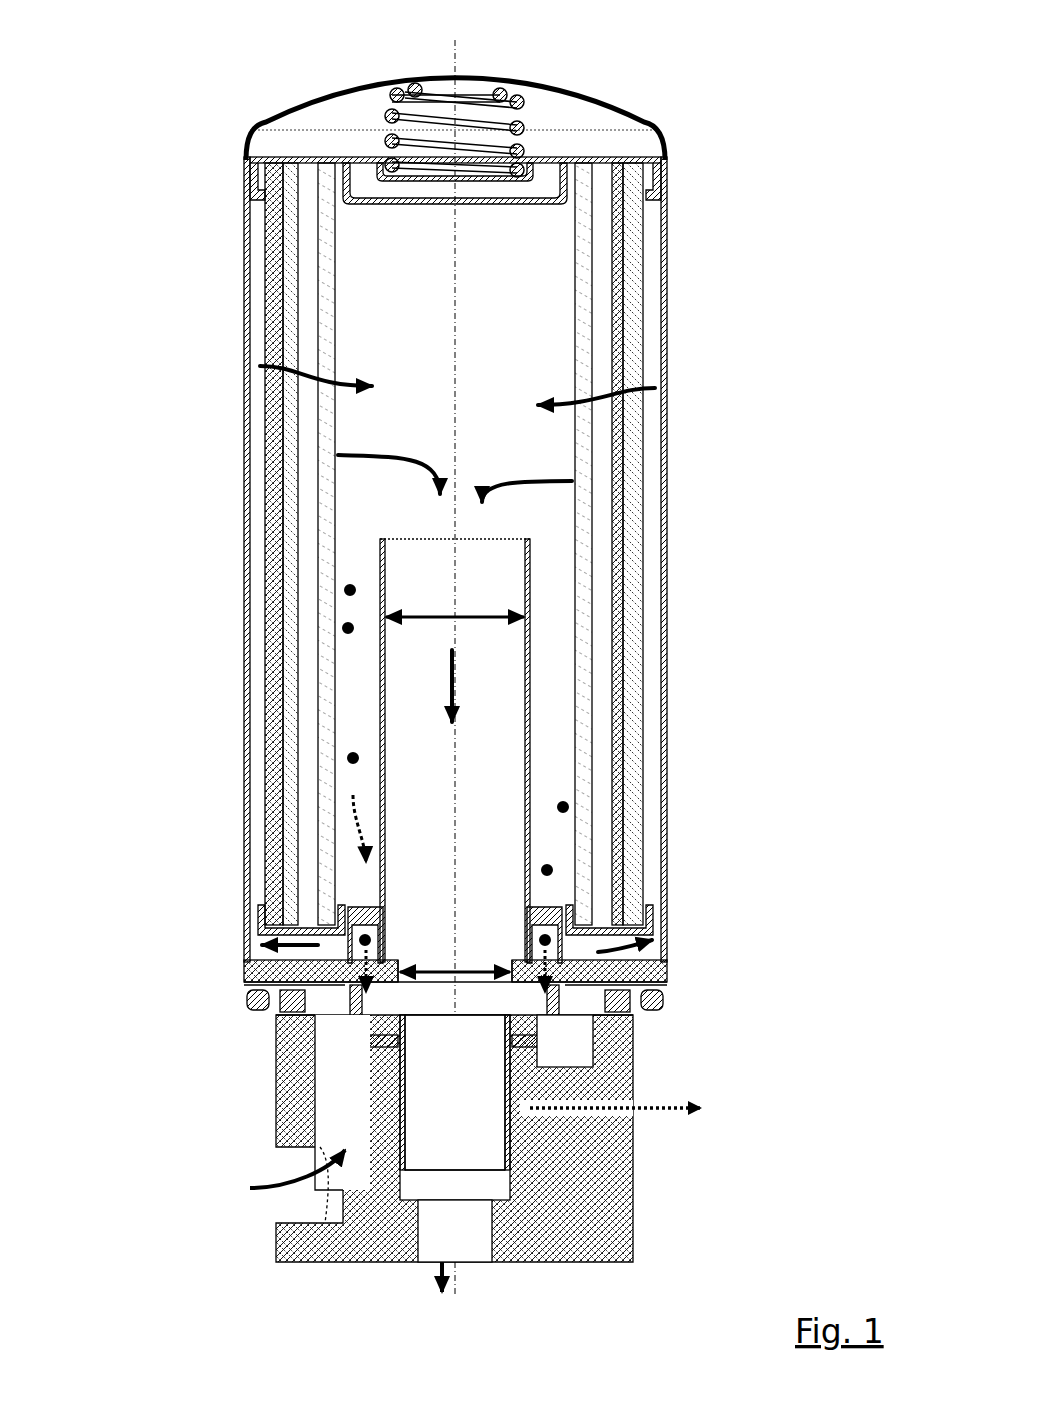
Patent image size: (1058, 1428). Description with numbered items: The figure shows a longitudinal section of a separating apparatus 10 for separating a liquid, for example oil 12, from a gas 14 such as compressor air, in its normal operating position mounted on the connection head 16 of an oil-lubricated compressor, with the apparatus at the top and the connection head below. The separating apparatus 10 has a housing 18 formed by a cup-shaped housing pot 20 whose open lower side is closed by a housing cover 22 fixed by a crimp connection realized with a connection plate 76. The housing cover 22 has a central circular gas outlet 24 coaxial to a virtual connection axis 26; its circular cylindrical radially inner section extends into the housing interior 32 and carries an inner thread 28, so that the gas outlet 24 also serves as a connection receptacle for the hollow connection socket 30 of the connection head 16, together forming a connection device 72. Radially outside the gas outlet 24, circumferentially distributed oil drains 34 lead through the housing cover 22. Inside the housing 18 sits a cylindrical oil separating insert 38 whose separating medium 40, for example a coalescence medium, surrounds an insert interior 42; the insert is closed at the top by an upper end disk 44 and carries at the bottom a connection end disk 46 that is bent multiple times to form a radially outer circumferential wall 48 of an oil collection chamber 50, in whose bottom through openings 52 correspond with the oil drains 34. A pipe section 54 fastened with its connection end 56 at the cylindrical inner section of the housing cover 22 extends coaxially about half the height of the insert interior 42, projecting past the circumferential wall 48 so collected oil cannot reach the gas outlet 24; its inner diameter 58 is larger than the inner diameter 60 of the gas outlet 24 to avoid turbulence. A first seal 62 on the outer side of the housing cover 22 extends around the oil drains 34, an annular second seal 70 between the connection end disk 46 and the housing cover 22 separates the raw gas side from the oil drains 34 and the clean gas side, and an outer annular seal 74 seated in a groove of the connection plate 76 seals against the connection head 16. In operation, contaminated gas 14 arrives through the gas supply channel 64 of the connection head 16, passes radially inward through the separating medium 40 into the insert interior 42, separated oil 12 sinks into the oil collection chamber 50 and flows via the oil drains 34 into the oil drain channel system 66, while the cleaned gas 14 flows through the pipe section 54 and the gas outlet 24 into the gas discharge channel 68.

The separating apparatus 10 is at (297, 103).
The oil 12 is at (345, 590).
The gas 14 is at (275, 1182).
The connection head 16 is at (603, 1228).
The housing 18 is at (248, 153).
The housing pot 20 is at (248, 250).
The housing cover 22 is at (255, 993).
The gas outlet 24 is at (445, 962).
The connection axis 26 is at (460, 45).
The inner thread 28 is at (515, 962).
The connection socket 30 is at (490, 1132).
The housing interior 32 is at (375, 323).
The oil drains 34 is at (352, 1018).
The oil separating insert 38 is at (648, 245).
The separating medium 40 is at (590, 320).
The insert interior 42 is at (457, 487).
The upper end disk 44 is at (625, 160).
The connection end disk 46 is at (650, 928).
The circumferential wall 48 is at (355, 920).
The oil collection chamber 50 is at (372, 910).
The through openings 52 is at (385, 965).
The pipe section 54 is at (530, 710).
The connection end 56 is at (540, 945).
The inner diameter of the pipe section 58 is at (438, 615).
The inner diameter of the gas outlet 60 is at (462, 1000).
The first seal 62 is at (580, 1032).
The gas supply channel 64 is at (330, 1088).
The oil drain channel system 66 is at (615, 1113).
The gas discharge channel 68 is at (470, 1222).
The second seal 70 is at (565, 960).
The connection device 72 is at (676, 1008).
The outer annular seal 74 is at (242, 1005).
The connection plate 76 is at (560, 1023).